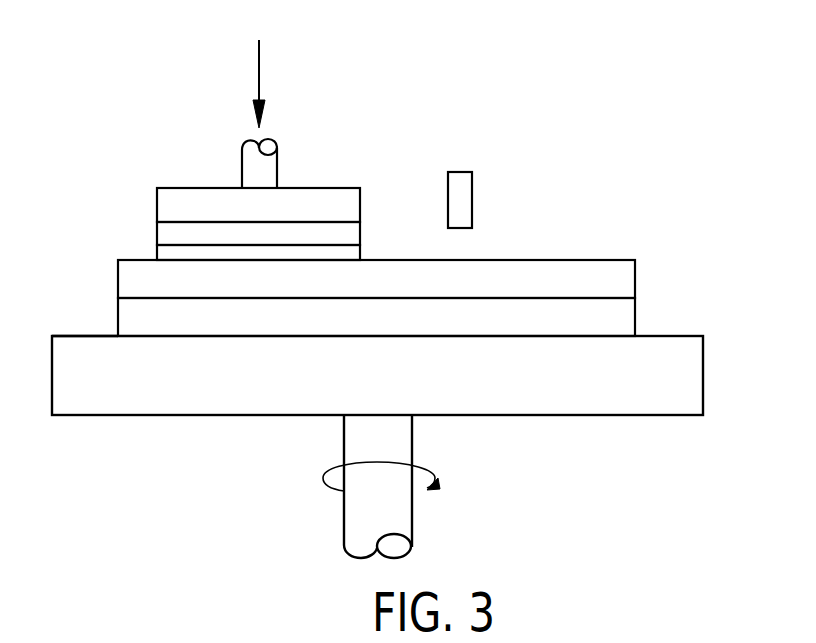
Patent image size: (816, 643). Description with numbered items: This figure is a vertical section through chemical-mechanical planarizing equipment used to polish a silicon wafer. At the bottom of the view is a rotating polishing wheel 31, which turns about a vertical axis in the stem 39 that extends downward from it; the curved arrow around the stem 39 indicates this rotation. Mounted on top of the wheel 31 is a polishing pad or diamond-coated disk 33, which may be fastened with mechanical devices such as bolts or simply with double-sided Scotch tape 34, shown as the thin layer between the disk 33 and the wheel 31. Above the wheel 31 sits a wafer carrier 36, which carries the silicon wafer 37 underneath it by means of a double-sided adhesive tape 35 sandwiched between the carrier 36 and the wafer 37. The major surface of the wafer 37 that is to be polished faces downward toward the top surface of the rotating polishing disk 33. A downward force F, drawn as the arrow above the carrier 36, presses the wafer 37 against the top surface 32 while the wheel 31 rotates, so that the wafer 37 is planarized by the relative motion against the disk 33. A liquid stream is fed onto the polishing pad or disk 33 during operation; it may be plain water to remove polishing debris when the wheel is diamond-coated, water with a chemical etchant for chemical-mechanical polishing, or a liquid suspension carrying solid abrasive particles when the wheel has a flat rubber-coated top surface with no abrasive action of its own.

The downward force F is at (258, 68).
The rotating polishing wheel 31 is at (693, 355).
The top surface 32 is at (65, 337).
The polishing pad or diamond-coated disk 33 is at (622, 274).
The double-sided Scotch tape 34 is at (625, 320).
The double-sided adhesive tape 35 is at (172, 230).
The wafer carrier 36 is at (355, 197).
The silicon wafer 37 is at (355, 253).
The stem 39 is at (360, 517).